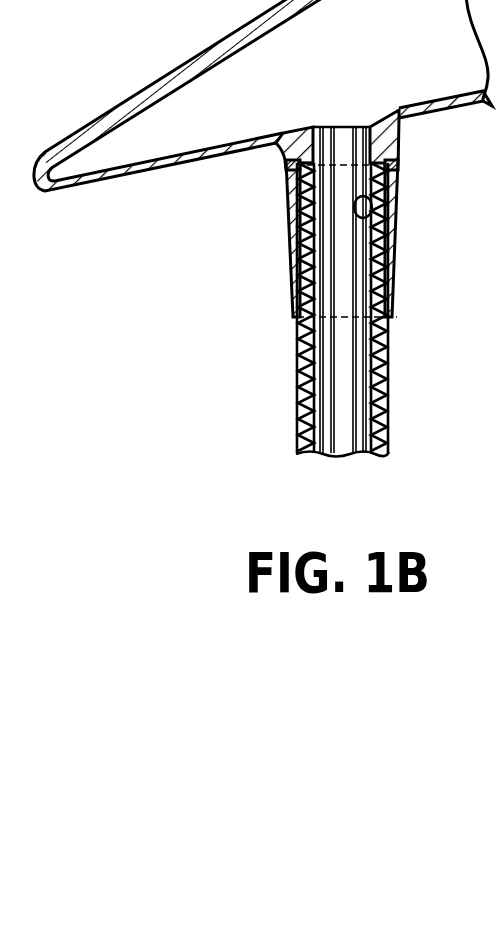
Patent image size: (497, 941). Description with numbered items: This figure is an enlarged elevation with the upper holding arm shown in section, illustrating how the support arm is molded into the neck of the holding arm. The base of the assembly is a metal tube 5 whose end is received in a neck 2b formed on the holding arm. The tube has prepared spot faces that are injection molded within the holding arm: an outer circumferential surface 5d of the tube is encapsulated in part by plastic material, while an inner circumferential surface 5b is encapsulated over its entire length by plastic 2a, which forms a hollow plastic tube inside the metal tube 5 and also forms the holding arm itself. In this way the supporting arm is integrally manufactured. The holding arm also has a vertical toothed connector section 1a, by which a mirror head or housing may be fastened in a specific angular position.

The vertical toothed connector section 1a is at (338, 377).
The plastic tube 2a is at (318, 323).
The neck 2b is at (397, 243).
The tube 5 is at (388, 387).
The inner circumferential surface 5b is at (372, 201).
The outer circumferential surface 5d is at (290, 212).